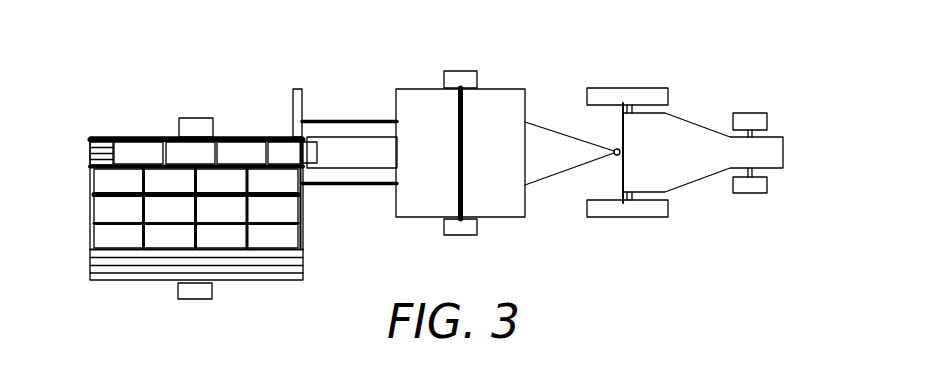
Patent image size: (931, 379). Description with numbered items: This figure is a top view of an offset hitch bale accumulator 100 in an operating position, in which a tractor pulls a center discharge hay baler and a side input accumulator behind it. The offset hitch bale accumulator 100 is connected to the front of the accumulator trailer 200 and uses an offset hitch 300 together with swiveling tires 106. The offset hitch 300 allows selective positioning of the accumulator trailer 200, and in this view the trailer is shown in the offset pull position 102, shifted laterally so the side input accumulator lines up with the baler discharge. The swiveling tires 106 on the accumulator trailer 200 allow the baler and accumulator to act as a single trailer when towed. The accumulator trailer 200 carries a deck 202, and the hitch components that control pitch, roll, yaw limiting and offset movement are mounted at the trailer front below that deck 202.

The offset hitch bale accumulator 100 is at (538, 117).
The offset pull position 102 is at (217, 187).
The swiveling tires 106 is at (198, 118).
The accumulator trailer 200 is at (102, 137).
The deck 202 is at (110, 280).
The offset hitch 300 is at (304, 107).